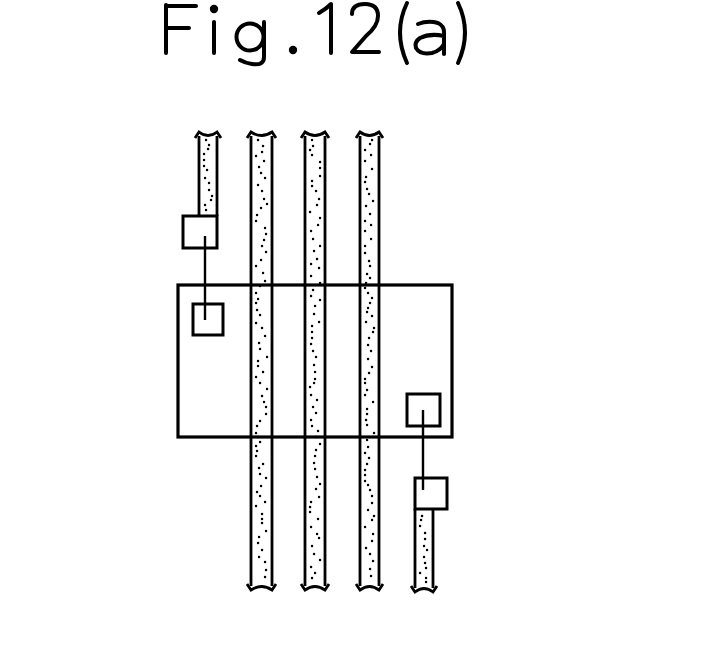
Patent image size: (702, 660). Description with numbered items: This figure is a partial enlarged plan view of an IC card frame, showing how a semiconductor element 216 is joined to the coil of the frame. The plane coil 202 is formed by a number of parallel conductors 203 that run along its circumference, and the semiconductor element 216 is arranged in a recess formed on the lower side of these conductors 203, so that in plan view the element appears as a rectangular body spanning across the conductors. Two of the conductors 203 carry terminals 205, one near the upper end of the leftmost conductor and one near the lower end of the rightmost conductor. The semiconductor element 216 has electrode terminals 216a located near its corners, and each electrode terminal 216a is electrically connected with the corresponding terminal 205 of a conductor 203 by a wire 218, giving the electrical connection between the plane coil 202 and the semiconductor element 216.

The plane coil 202 is at (193, 508).
The conductor 203 is at (199, 157).
The terminal 205 is at (193, 228).
The semiconductor element 216 is at (430, 323).
The electrode terminal 216a is at (205, 320).
The wire 218 is at (205, 266).